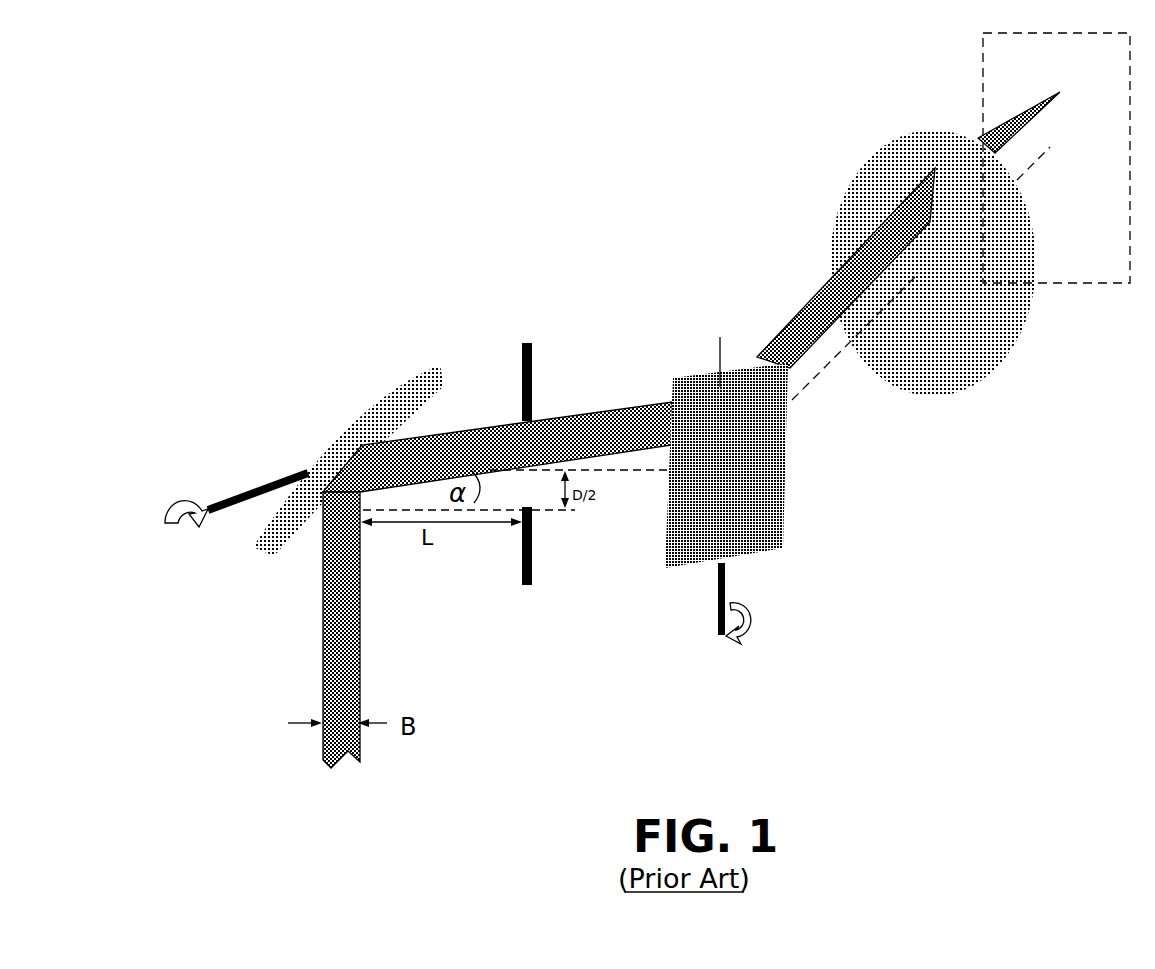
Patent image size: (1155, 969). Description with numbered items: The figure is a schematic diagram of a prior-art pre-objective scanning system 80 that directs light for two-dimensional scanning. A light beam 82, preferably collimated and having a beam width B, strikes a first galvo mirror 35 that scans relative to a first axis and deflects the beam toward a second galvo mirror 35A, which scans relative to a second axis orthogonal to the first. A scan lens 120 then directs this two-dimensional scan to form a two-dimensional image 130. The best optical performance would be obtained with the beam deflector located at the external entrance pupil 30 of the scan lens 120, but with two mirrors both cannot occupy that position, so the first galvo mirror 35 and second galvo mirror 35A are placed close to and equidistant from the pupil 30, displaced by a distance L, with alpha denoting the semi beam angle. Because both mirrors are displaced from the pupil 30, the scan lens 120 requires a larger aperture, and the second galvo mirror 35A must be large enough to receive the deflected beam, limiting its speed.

The pre-objective scanning system 80 is at (436, 193).
The light beam 82 is at (322, 690).
The first galvo mirror 35 is at (368, 398).
The second galvo mirror 35A is at (797, 479).
The entrance pupil 30 is at (536, 578).
The scan lens 120 is at (835, 218).
The 2-D image 130 is at (979, 60).